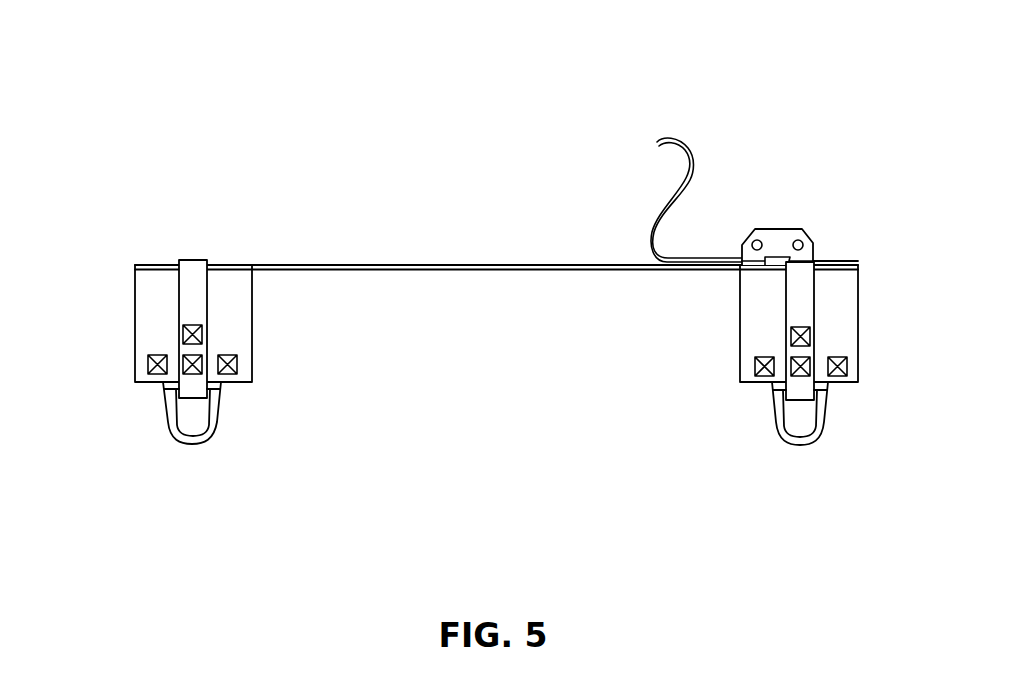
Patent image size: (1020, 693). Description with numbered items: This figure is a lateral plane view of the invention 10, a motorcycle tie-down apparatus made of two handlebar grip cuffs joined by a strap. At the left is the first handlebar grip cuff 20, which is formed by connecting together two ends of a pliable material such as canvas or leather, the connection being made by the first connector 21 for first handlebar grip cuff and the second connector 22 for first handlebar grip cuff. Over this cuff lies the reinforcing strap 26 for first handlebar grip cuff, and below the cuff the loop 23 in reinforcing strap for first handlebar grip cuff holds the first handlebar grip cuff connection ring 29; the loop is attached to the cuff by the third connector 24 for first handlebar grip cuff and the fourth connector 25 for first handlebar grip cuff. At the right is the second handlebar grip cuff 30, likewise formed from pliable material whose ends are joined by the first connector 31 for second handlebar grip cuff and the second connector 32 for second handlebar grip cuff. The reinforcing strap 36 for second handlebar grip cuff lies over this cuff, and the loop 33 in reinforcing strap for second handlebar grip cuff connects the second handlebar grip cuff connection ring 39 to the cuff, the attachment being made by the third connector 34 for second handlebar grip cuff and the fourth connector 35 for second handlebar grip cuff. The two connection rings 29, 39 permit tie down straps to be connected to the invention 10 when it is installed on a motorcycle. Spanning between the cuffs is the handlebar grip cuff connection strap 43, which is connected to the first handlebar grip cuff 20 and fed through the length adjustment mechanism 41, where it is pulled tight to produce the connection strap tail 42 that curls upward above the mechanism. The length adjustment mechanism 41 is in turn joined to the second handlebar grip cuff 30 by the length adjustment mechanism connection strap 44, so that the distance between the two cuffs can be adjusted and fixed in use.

The invention 10 is at (518, 157).
The first handlebar grip cuff 20 is at (135, 287).
The first connector for first handlebar grip cuff 21 is at (148, 362).
The second connector for first handlebar grip cuff 22 is at (237, 362).
The loop in reinforcing strap for first handlebar grip cuff 23 is at (190, 400).
The third connector for first handlebar grip cuff 24 is at (202, 362).
The fourth connector for first handlebar grip cuff 25 is at (183, 336).
The reinforcing strap for first handlebar grip cuff 26 is at (192, 260).
The first handlebar grip cuff connection ring 29 is at (182, 436).
The second handlebar grip cuff 30 is at (858, 285).
The first connector for second handlebar grip cuff 31 is at (755, 364).
The second connector for second handlebar grip cuff 32 is at (847, 366).
The loop in reinforcing strap for second handlebar grip cuff 33 is at (797, 402).
The third connector for second handlebar grip cuff 34 is at (811, 367).
The fourth connector for second handlebar grip cuff 35 is at (800, 327).
The reinforcing strap for second handlebar grip cuff 36 is at (814, 317).
The second handlebar grip cuff connection ring 39 is at (815, 440).
The length adjustment mechanism 41 is at (779, 228).
The connection strap tail 42 is at (689, 170).
The handlebar grip cuff connection strap 43 is at (152, 263).
The length adjustment mechanism connection strap 44 is at (833, 260).